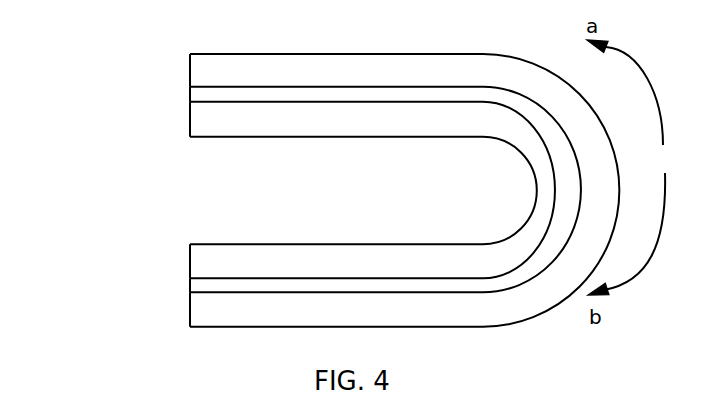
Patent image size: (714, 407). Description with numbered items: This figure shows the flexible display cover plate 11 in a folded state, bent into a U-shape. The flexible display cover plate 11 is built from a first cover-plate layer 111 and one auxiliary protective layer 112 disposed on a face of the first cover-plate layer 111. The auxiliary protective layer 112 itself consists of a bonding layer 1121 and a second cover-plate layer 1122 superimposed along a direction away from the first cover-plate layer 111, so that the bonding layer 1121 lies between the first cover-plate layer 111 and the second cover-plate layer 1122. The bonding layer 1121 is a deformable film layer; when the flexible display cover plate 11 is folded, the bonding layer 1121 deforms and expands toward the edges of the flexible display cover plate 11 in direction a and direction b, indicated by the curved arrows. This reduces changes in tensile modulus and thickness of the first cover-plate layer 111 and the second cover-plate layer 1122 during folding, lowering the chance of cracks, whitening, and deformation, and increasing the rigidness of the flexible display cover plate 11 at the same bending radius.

The flexible display cover plate 11 is at (358, 166).
The first cover-plate layer 111 is at (191, 119).
The auxiliary protective layer 112 is at (323, 190).
The bonding layer 1121 is at (191, 93).
The second cover-plate layer 1122 is at (191, 65).